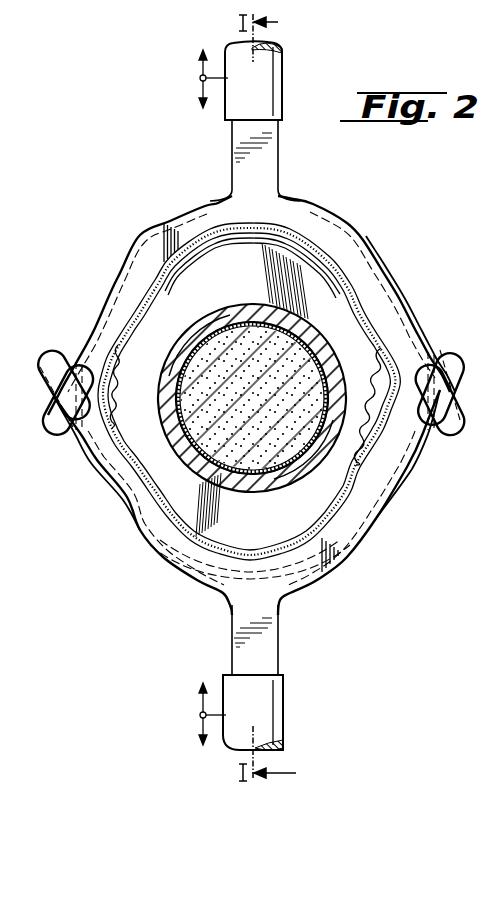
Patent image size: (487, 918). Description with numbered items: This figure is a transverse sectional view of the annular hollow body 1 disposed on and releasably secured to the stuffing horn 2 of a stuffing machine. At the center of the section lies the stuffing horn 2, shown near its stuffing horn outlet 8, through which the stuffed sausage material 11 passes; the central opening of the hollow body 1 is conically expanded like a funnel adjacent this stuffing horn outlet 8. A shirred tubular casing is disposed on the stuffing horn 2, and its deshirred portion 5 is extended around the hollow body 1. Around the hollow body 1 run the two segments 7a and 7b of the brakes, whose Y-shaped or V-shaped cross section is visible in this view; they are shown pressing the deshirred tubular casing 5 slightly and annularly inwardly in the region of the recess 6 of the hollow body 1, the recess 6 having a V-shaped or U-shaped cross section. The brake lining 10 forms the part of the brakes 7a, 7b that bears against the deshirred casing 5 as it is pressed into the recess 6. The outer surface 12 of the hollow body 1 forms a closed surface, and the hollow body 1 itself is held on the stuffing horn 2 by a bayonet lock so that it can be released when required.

The annular hollow body 1 is at (158, 373).
The stuffing horn 2 is at (250, 468).
The deshirred portion 5 is at (356, 302).
The recess 6 is at (119, 451).
The brake 7a is at (273, 698).
The brake 7b is at (283, 78).
The stuffing horn outlet 8 is at (250, 329).
The brake lining 10 is at (320, 240).
The stuffed sausage material 11 is at (268, 450).
The outer surface 12 is at (157, 256).